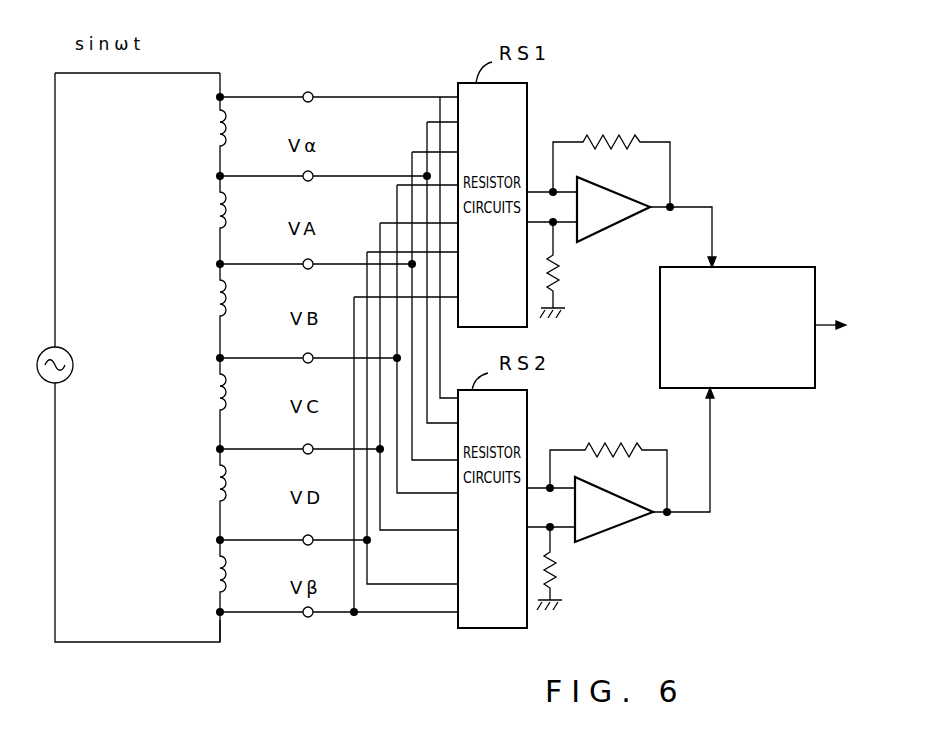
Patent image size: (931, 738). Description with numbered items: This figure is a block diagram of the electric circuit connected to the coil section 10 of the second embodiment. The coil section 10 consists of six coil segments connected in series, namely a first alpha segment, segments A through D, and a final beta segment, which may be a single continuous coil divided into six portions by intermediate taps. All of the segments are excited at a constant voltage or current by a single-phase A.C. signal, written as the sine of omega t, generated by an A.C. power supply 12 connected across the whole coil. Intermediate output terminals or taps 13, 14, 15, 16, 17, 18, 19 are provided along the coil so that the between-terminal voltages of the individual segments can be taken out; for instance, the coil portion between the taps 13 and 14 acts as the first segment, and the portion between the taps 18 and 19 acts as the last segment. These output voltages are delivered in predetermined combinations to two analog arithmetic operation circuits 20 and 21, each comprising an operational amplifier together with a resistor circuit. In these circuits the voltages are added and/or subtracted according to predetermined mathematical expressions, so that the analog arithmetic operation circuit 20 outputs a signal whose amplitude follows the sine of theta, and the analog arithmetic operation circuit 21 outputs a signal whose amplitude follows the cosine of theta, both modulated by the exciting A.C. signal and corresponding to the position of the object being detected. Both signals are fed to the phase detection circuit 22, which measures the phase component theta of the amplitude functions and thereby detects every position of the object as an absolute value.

The coil section 10 is at (242, 70).
The A.C. power supply 12 is at (63, 349).
The tap 13 is at (314, 92).
The tap 14 is at (318, 172).
The tap 15 is at (302, 261).
The tap 16 is at (303, 355).
The tap 17 is at (303, 446).
The tap 18 is at (303, 537).
The tap 19 is at (305, 620).
The analog arithmetic operation circuit 20 is at (597, 120).
The analog arithmetic operation circuit 21 is at (565, 431).
The phase detection circuit 22 is at (736, 268).